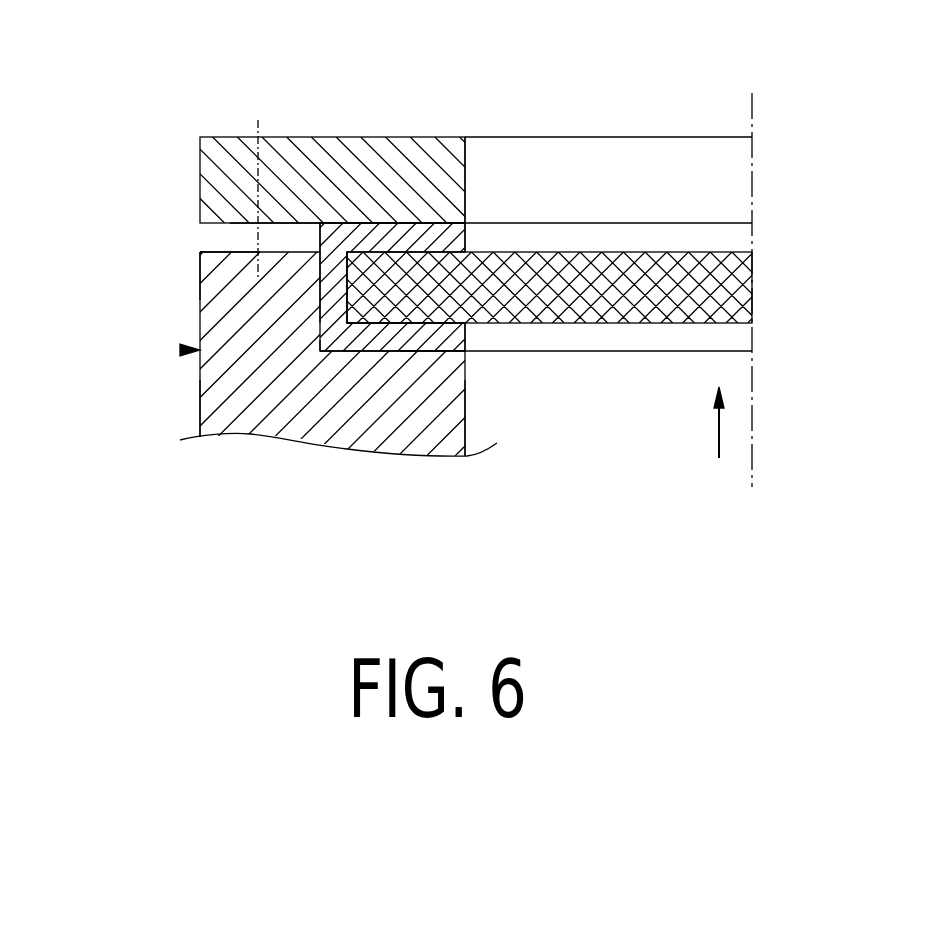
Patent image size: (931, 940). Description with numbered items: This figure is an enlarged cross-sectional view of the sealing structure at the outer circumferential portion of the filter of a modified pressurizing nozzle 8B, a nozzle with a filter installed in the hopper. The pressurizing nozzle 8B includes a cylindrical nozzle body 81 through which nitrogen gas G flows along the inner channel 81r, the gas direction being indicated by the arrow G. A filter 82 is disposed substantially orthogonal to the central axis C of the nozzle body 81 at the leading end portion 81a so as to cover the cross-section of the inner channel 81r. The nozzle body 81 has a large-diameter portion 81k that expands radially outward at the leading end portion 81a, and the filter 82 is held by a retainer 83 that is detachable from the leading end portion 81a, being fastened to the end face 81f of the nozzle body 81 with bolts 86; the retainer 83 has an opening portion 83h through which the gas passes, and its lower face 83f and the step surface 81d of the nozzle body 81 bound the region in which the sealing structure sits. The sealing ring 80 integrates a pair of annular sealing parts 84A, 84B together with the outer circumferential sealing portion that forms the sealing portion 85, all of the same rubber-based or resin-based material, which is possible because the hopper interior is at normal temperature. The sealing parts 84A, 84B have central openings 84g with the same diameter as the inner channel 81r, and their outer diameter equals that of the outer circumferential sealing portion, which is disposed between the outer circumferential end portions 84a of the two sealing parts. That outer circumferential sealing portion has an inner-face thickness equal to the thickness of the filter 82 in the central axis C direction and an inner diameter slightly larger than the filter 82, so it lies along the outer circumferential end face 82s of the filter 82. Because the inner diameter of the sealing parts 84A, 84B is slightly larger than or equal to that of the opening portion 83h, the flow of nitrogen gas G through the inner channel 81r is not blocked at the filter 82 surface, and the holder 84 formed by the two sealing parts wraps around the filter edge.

The pressurizing nozzle 8B is at (182, 350).
The sealing ring 80 is at (320, 226).
The nozzle body 81 is at (200, 377).
The leading end portion 81a is at (200, 267).
The step surface of first member 81d is at (446, 346).
The end face 81f is at (220, 250).
The large-diameter portion 81k is at (200, 408).
The inner channel 81r is at (466, 422).
The filter 82 is at (658, 325).
The outer circumferential end face 82s is at (337, 310).
The retainer 83 is at (212, 137).
The lower face of second member 83f is at (268, 226).
The opening portion 83h is at (466, 165).
The holder 84 is at (474, 287).
The sealing part 84A is at (425, 222).
The sealing part 84B is at (397, 352).
The outer circumferential end portion 84a is at (367, 222).
The opening 84g is at (466, 242).
The sealing portion 85 is at (318, 297).
The bolt 86 is at (258, 120).
The central axis C is at (753, 188).
The nitrogen gas G is at (717, 438).